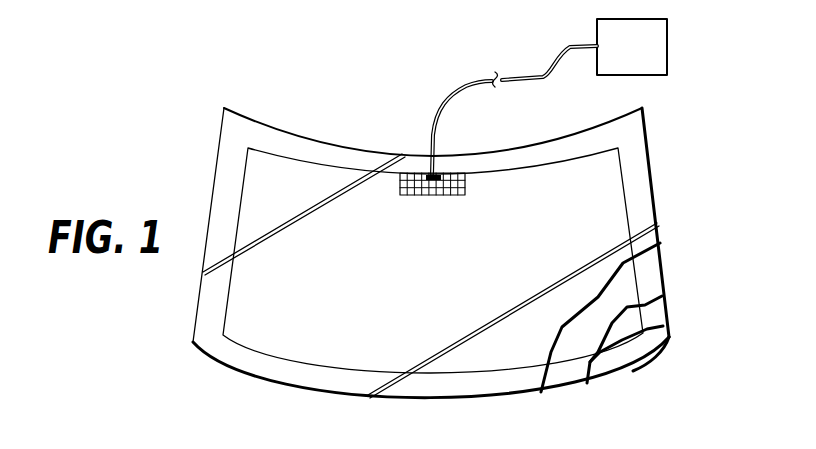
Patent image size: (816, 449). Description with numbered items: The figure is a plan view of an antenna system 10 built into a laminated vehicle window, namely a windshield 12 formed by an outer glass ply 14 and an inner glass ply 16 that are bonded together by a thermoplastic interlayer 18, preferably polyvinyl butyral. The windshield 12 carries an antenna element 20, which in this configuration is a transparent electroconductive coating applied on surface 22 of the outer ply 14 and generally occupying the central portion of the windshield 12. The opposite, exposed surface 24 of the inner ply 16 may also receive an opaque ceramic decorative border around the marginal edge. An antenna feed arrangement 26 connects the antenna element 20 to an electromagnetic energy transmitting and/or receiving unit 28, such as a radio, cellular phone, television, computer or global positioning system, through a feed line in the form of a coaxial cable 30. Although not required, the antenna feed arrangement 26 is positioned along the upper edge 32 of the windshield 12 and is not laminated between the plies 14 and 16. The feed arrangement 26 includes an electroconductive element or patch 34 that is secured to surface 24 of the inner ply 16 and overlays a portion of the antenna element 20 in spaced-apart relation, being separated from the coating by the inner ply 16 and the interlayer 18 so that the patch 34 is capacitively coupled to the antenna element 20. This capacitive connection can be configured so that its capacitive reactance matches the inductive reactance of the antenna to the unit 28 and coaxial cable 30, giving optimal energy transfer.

The antenna system 10 is at (176, 154).
The windshield 12 is at (653, 155).
The outer glass ply 14 is at (655, 361).
The inner glass ply 16 is at (663, 257).
The thermoplastic interlayer 18 is at (664, 303).
The antenna element 20 is at (648, 327).
The surface of outer ply 22 is at (614, 356).
The surface of inner ply 24 is at (211, 302).
The antenna feed arrangement 26 is at (405, 139).
The electromagnetic energy transmitting and/or receiving unit 28 is at (668, 49).
The coaxial cable 30 is at (539, 81).
The upper edge 32 is at (287, 141).
The electroconductive patch 34 is at (467, 185).